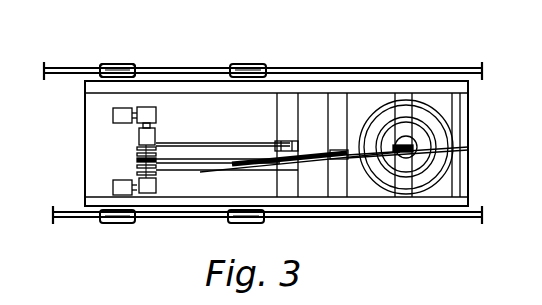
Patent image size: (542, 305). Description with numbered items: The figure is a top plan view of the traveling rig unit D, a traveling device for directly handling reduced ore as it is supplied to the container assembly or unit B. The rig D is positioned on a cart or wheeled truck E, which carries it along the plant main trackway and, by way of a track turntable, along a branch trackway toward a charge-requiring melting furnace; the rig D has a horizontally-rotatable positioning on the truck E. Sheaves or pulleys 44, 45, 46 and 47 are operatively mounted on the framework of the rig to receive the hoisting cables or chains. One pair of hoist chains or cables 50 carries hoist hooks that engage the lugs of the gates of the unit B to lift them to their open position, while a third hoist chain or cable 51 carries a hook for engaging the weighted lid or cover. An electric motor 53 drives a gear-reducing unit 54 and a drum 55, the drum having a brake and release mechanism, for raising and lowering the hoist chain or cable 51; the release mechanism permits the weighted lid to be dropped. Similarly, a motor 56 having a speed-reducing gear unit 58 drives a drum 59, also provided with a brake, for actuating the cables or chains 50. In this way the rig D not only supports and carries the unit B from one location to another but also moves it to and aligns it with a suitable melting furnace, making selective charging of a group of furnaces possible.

The container assembly or unit B is at (432, 178).
The traveling rig unit D is at (476, 89).
The cart or wheeled truck E is at (120, 66).
The sheave or pulley 44 is at (286, 140).
The sheave or pulley 45 is at (341, 161).
The sheave or pulley 46 is at (401, 143).
The sheave or pulley 47 is at (462, 150).
The hoist chains or cables 50 is at (216, 165).
The hoist chain or cable 51 is at (248, 142).
The electric motor 53 is at (113, 113).
The gear-reducing unit 54 is at (157, 111).
The drum 55 is at (157, 132).
The motor 56 is at (113, 186).
The speed-reducing gear unit 58 is at (157, 185).
The drum 59 is at (138, 163).